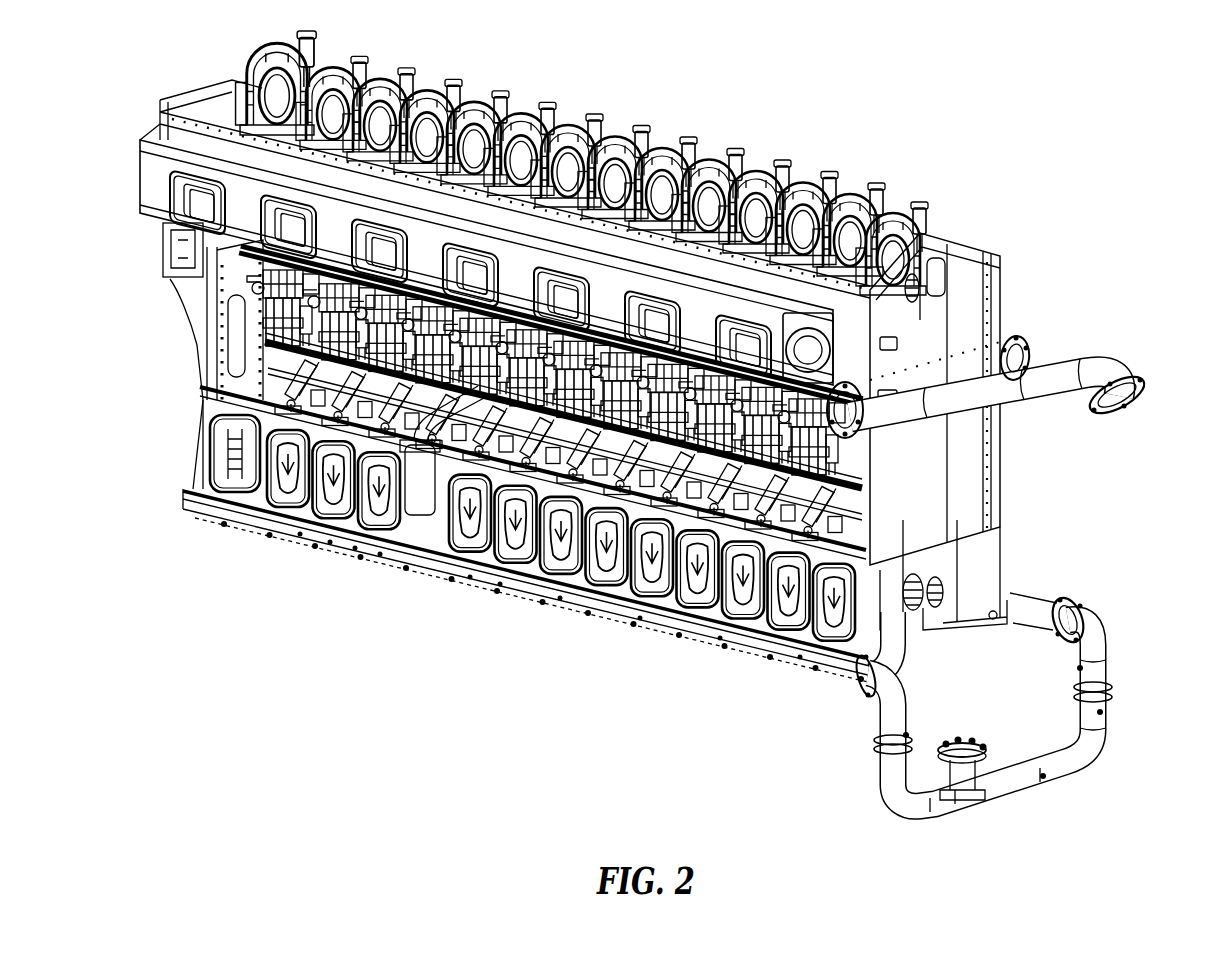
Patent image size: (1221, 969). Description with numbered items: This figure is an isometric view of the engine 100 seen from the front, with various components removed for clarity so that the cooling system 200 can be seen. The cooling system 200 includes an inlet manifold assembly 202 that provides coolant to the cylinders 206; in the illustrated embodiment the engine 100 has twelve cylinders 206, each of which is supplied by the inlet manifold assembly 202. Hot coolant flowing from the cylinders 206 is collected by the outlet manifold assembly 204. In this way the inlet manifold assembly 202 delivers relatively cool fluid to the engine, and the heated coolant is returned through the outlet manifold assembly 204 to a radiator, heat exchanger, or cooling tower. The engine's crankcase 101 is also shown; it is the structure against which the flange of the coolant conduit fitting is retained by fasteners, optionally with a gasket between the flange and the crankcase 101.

The engine 100 is at (716, 127).
The crankcase 101 is at (937, 460).
The cooling system 200 is at (1052, 503).
The inlet manifold assembly 202 is at (840, 752).
The outlet manifold assembly 204 is at (1032, 330).
The cylinders 206 is at (270, 355).